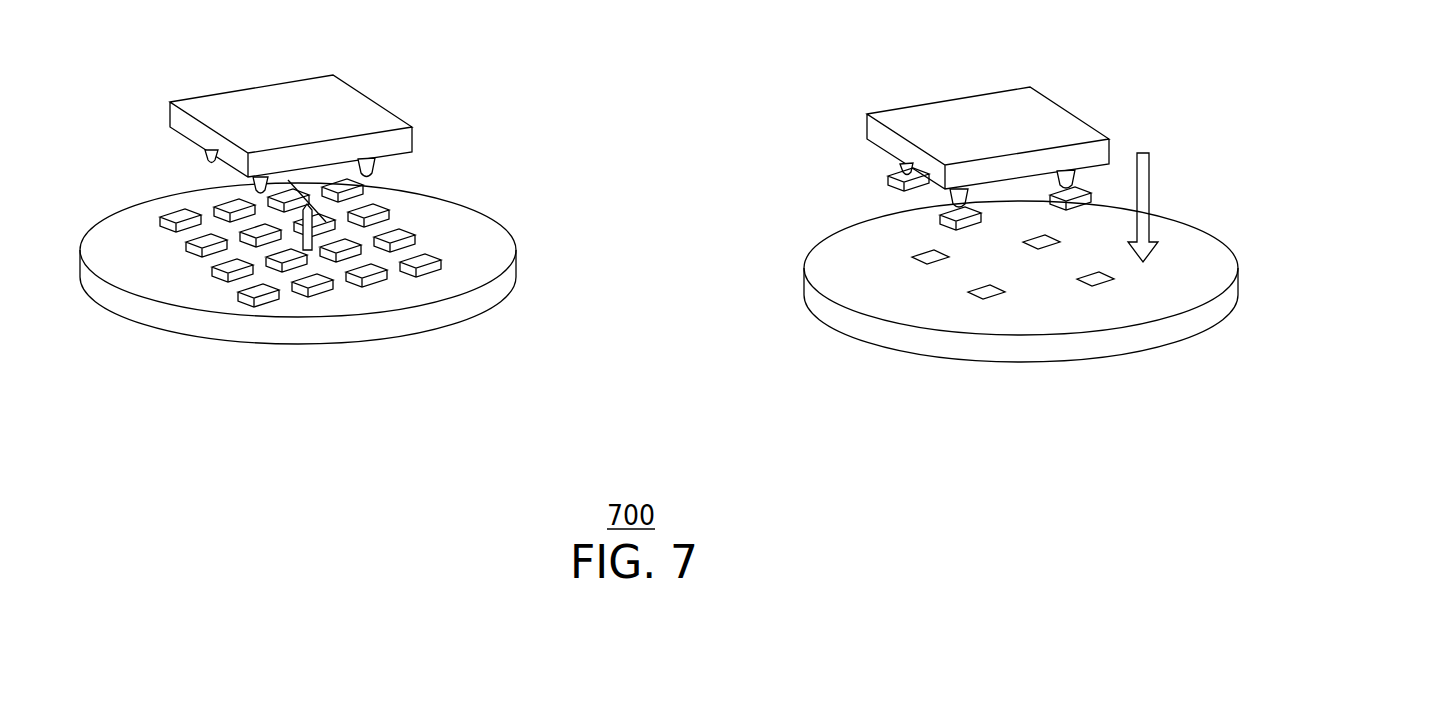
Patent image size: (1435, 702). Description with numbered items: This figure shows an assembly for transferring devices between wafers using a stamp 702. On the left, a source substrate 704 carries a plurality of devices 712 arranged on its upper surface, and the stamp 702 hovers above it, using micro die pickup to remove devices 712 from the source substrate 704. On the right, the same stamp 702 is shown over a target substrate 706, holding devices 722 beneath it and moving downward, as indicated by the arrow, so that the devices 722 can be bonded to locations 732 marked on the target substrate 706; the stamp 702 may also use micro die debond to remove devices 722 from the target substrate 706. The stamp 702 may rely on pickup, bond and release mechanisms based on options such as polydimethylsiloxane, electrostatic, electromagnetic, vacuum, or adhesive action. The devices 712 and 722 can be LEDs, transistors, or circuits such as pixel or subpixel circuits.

The stamp 702 is at (342, 95).
The source substrate 704 is at (508, 210).
The target substrate 706 is at (1228, 230).
The devices 712 is at (400, 232).
The devices 722 is at (890, 184).
The locations 732 is at (920, 254).